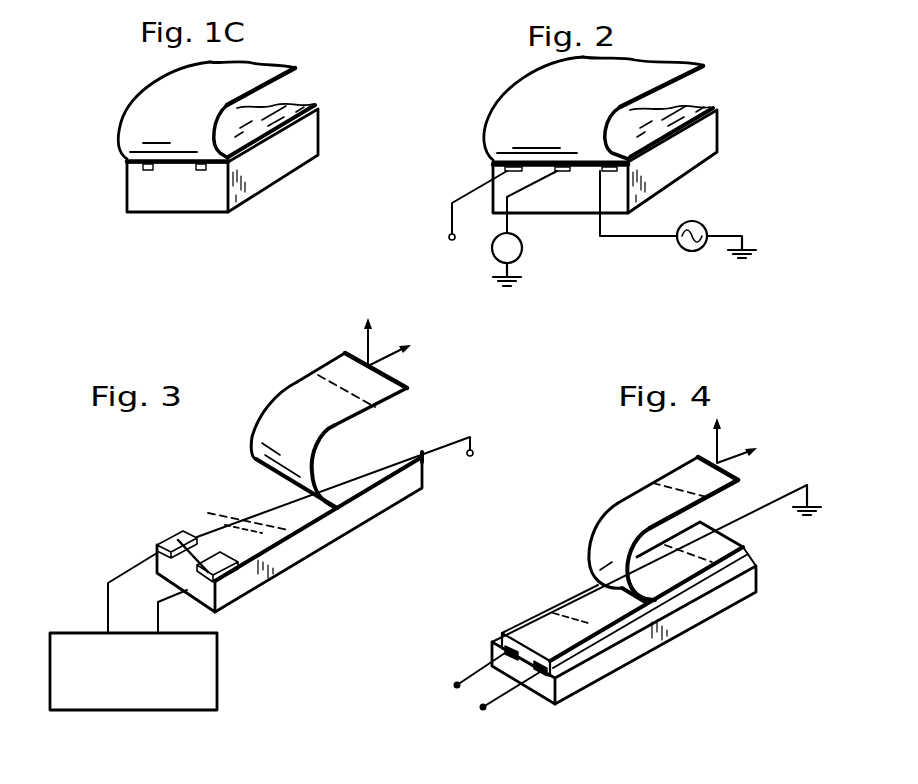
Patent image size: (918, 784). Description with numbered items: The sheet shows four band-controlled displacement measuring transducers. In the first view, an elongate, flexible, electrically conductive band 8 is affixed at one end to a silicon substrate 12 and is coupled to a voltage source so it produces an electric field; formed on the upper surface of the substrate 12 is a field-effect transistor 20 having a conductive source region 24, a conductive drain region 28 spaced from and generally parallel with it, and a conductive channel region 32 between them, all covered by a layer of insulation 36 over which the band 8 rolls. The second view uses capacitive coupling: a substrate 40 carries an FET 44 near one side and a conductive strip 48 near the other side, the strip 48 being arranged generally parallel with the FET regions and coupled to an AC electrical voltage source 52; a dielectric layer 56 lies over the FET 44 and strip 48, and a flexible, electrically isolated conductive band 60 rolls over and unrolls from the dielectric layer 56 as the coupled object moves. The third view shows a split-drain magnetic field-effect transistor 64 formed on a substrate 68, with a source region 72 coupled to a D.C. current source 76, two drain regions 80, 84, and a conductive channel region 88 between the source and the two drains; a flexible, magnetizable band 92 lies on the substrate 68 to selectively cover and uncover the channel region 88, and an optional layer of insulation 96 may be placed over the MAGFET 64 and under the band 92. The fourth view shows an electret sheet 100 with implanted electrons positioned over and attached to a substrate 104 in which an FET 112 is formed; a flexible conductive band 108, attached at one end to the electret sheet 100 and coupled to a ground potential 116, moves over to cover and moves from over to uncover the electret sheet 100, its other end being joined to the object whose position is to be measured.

In FIG. 1C, the band 8 is at (298, 70).
In FIG. 1C, the substrate 12 is at (276, 192).
In FIG. 1C, the field-effect transistor 20 is at (121, 161).
In FIG. 1C, the source region 24 is at (148, 172).
In FIG. 1C, the drain region 28 is at (200, 172).
In FIG. 1C, the channel region 32 is at (176, 176).
In FIG. 1C, the layer of insulation 36 is at (304, 128).
In FIG. 2, the substrate 40 is at (700, 153).
In FIG. 2, the field-effect transistor 44 is at (530, 152).
In FIG. 2, the conductive strip 48 is at (593, 172).
In FIG. 2, the AC electrical voltage source 52 is at (705, 221).
In FIG. 2, the dielectric layer 56 is at (713, 113).
In FIG. 2, the conductive band 60 is at (703, 65).
In FIG. 3, the split-drain magnetic field-effect transistor 64 is at (154, 543).
In FIG. 3, the substrate 68 is at (285, 553).
In FIG. 3, the source region 72 is at (410, 458).
In FIG. 3, the D.C. current source 76 is at (476, 456).
In FIG. 3, the drain region 80 is at (177, 532).
In FIG. 3, the drain region 84 is at (237, 574).
In FIG. 3, the channel region 88 is at (238, 507).
In FIG. 3, the magnetizable band 92 is at (317, 390).
In FIG. 3, the layer of insulation 96 is at (327, 520).
In FIG. 4, the electret sheet 100 is at (597, 637).
In FIG. 4, the substrate 104 is at (695, 608).
In FIG. 4, the conductive band 108 is at (653, 493).
In FIG. 4, the field-effect transistor 112 is at (522, 654).
In FIG. 4, the ground potential 116 is at (808, 518).